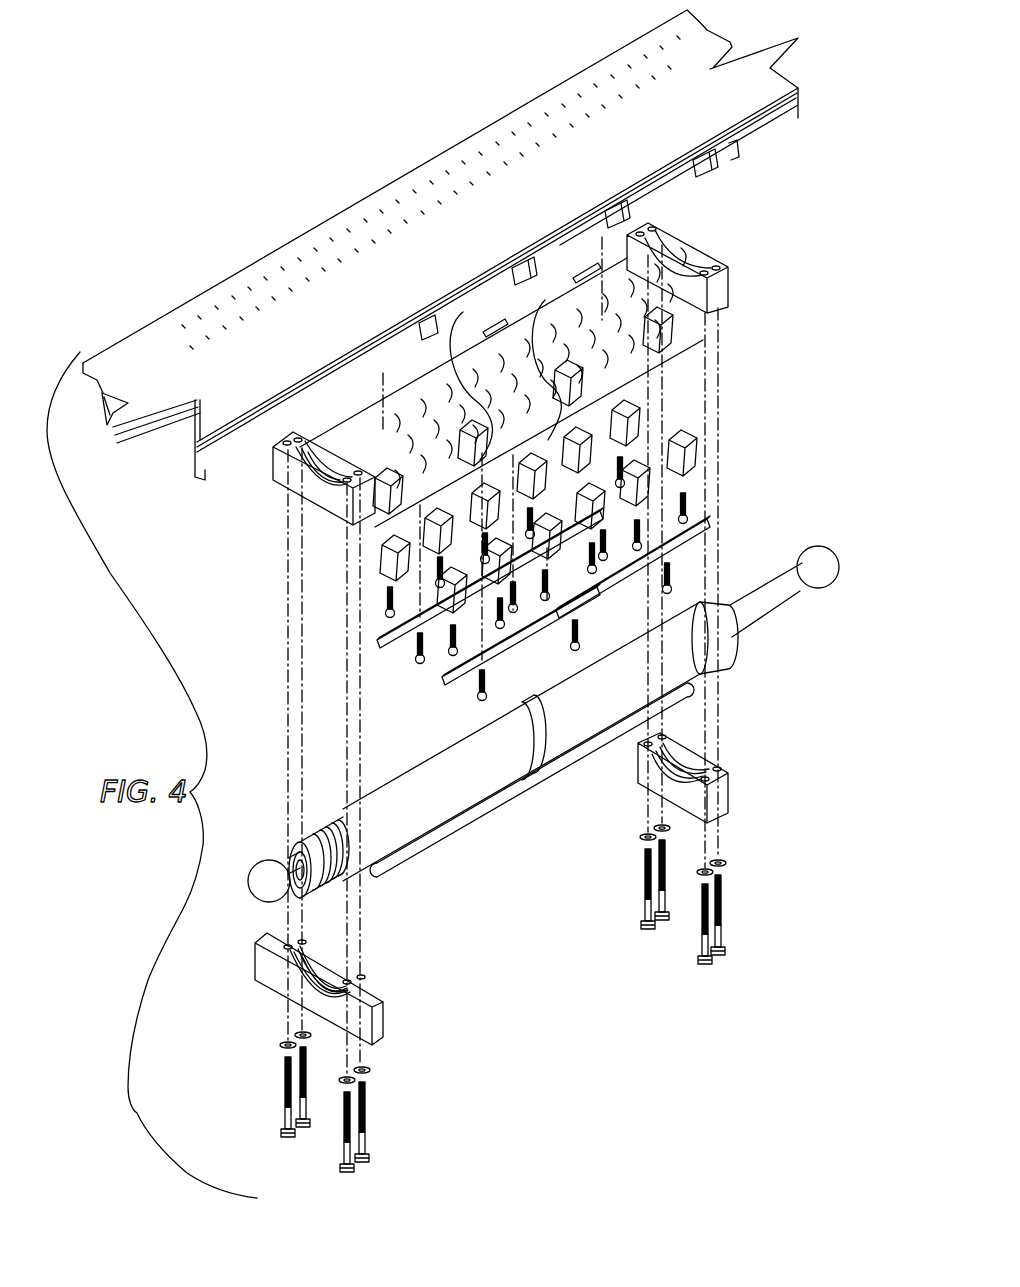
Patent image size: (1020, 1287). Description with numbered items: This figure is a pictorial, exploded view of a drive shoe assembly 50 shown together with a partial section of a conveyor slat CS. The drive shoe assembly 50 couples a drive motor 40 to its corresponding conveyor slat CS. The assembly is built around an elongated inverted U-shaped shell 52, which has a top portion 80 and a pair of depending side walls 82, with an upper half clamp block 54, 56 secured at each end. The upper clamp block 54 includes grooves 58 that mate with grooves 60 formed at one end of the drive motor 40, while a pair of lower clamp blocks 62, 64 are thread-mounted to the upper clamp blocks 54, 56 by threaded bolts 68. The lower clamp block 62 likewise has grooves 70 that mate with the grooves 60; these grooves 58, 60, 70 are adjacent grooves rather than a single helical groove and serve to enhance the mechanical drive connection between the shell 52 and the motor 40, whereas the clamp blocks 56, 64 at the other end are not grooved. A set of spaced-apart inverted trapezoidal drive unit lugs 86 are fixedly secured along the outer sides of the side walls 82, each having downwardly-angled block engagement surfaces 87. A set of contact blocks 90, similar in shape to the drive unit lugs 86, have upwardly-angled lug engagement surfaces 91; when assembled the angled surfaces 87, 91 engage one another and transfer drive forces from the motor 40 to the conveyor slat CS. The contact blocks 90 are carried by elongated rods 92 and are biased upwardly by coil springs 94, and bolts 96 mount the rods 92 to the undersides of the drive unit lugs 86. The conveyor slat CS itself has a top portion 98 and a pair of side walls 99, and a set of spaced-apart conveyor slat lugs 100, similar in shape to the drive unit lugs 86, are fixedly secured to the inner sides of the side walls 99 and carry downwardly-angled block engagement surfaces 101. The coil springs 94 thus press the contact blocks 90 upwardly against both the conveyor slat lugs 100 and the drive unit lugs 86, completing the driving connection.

The conveyor slat CS is at (365, 186).
The drive motor 40 is at (467, 838).
The drive shoe assembly 50 is at (770, 373).
The inverted U-shaped shell 52 is at (672, 232).
The upper clamp block 54 is at (280, 485).
The upper clamp block 56 is at (695, 258).
The grooves 58 is at (300, 495).
The grooves 60 is at (327, 815).
The lower clamp block 62 is at (270, 975).
The lower clamp block 64 is at (720, 800).
The threaded bolts 68 is at (268, 1092).
The grooves 70 is at (300, 982).
The top portion 80 is at (707, 236).
The side walls 82 is at (318, 488).
The drive unit lugs 86 is at (660, 340).
The block engagement surfaces 87 is at (535, 320).
The contact blocks 90 is at (671, 432).
The lug engagement surfaces 91 is at (612, 520).
The elongated rods 92 is at (455, 680).
The coil springs 94 is at (388, 605).
The bolts 96 is at (490, 673).
The top portion 98 is at (195, 452).
The side walls 99 is at (104, 412).
The conveyor slat lugs 100 is at (620, 212).
The block engagement surfaces 101 is at (600, 235).